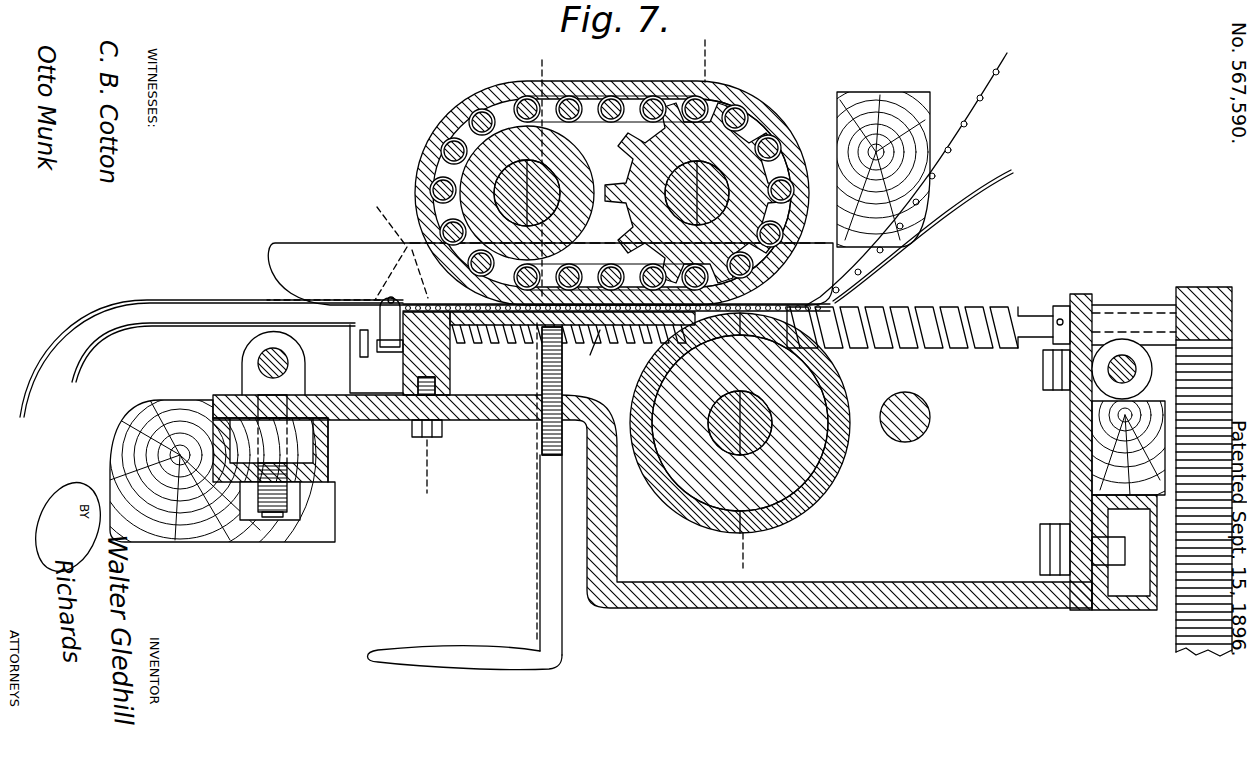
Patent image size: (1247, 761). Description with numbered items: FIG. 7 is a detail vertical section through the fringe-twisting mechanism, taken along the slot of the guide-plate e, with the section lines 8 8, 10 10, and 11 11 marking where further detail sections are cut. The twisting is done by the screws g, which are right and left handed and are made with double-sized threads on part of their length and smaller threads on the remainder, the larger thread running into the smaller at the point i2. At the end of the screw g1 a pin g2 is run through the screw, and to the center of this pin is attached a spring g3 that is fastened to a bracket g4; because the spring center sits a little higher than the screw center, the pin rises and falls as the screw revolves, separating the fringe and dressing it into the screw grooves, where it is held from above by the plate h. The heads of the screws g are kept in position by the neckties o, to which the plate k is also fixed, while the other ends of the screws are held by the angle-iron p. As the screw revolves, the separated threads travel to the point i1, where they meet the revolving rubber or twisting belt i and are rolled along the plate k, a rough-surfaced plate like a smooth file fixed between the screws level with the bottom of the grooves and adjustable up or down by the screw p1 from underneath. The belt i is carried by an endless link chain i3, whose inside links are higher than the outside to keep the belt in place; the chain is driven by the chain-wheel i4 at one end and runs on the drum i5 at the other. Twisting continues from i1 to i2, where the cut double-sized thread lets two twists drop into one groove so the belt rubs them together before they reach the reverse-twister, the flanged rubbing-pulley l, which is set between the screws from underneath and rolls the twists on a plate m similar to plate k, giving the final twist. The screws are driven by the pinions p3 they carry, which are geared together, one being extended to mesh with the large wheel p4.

The twisting or rubbing belt i is at (452, 114).
The twisting start point i1 is at (616, 296).
The thread change point i2 is at (628, 378).
The endless link chain i3 is at (513, 100).
The chain-wheel i4 is at (744, 193).
The drum i5 is at (527, 193).
The section line 10 10 is at (470, 354).
The section line 11 11 is at (739, 299).
The section line 8 8 is at (400, 353).
The plate h is at (550, 274).
The screw g is at (920, 327).
The screw end g1 is at (593, 360).
The pin g2 is at (347, 273).
The spring g3 is at (385, 348).
The bracket g4 is at (360, 352).
The guide-plate e is at (526, 286).
The necktie o is at (436, 353).
The plate k is at (572, 342).
The angle-iron p is at (1081, 294).
The adjusting screw p1 is at (540, 505).
The pinion p3 is at (1196, 287).
The large wheel p4 is at (1204, 502).
The rubbing-pulley l is at (744, 423).
The plate m is at (885, 179).